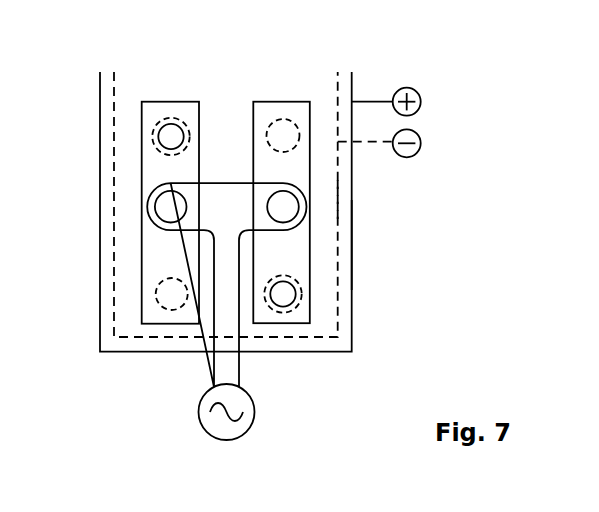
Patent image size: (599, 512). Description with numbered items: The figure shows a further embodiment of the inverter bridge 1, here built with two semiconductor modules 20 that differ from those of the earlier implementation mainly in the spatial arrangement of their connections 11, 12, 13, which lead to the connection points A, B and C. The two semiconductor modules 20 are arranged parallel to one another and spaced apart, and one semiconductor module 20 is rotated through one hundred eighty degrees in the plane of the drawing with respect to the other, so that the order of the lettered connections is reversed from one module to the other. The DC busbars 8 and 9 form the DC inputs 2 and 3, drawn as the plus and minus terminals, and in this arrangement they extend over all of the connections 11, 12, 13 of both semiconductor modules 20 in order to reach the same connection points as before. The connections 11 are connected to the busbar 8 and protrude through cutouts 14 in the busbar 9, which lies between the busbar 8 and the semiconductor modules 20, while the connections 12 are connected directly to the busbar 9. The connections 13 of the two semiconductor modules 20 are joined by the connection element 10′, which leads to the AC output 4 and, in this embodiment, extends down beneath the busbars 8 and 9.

The inverter bridge 1 is at (134, 361).
The DC input 2 is at (425, 88).
The DC input 3 is at (425, 148).
The AC output 4 is at (250, 429).
The DC busbar 8 is at (353, 242).
The DC busbar 9 is at (345, 198).
The connection element 10′ is at (214, 352).
The connection 11 is at (161, 146).
The connection 12 is at (157, 288).
The connection 13 is at (150, 220).
The cutout 14 is at (153, 137).
The semiconductor module 20 is at (134, 330).